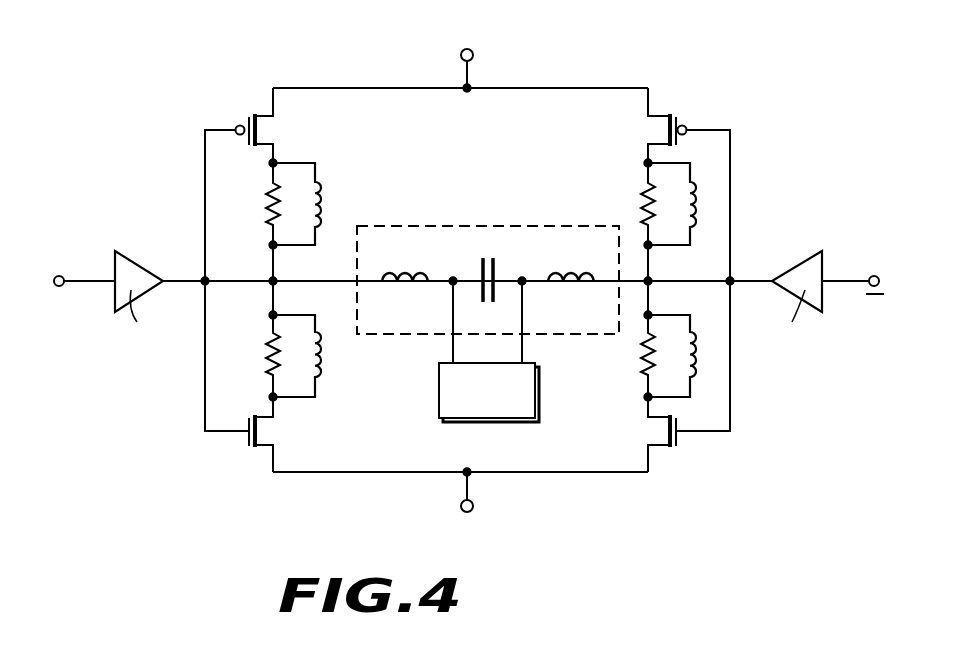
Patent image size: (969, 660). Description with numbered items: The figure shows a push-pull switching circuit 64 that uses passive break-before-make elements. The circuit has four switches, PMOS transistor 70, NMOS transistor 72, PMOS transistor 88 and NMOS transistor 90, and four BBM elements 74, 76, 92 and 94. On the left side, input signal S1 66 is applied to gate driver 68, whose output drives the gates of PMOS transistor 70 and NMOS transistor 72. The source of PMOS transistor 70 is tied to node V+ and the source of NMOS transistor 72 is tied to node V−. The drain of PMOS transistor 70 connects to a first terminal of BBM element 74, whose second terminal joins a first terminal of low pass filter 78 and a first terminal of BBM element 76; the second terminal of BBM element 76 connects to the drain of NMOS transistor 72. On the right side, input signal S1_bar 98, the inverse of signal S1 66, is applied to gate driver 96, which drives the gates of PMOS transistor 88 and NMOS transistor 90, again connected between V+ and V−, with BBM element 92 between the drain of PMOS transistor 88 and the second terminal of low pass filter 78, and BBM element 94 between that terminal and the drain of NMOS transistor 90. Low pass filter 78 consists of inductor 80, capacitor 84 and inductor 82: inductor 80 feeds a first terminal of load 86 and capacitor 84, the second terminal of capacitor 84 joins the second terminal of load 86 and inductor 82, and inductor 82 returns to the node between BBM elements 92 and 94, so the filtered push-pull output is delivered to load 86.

The push-pull switching circuit 64 is at (830, 55).
The input signal S1 66 is at (61, 274).
The gate driver 68 is at (137, 265).
The PMOS transistor 70 is at (248, 116).
The NMOS transistor 72 is at (250, 446).
The BBM element 74 is at (256, 204).
The BBM element 76 is at (256, 354).
The low pass filter 78 is at (453, 225).
The inductor 80 is at (408, 268).
The inductor 82 is at (568, 268).
The capacitor 84 is at (496, 270).
The load 86 is at (469, 421).
The PMOS transistor 88 is at (677, 116).
The NMOS transistor 90 is at (674, 446).
The BBM element 92 is at (624, 204).
The BBM element 94 is at (622, 368).
The gate driver 96 is at (800, 262).
The input signal S1_bar 98 is at (875, 274).